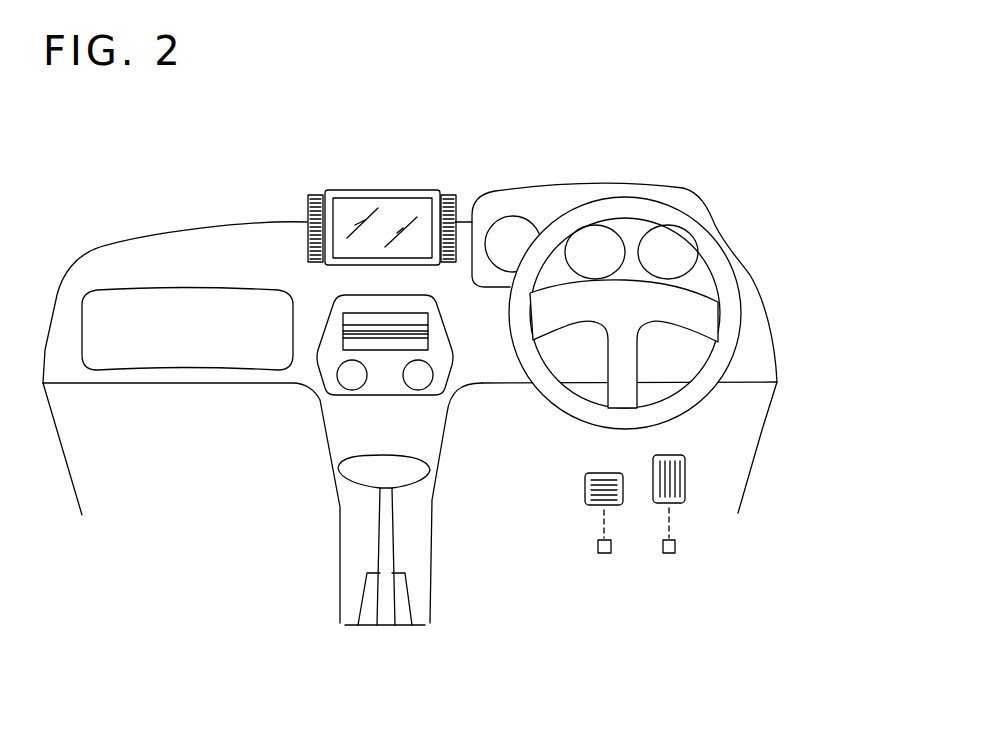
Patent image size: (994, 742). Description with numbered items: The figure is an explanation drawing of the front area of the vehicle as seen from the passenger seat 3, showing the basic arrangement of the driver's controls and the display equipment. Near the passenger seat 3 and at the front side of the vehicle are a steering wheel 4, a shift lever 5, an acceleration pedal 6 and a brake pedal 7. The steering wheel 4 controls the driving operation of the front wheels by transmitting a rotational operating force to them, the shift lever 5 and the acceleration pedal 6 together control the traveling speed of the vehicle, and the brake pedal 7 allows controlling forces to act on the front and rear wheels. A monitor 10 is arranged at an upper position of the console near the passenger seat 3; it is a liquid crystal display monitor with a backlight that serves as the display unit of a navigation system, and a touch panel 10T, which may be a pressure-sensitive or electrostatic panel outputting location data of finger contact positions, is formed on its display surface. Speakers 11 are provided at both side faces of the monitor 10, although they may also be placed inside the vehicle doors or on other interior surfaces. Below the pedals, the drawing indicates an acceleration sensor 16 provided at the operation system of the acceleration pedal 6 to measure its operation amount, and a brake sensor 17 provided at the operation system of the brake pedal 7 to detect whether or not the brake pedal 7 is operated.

The passenger seat 3 is at (772, 227).
The steering wheel 4 is at (732, 287).
The shift lever 5 is at (382, 468).
The acceleration pedal 6 is at (687, 482).
The brake pedal 7 is at (607, 473).
The monitor 10 is at (382, 190).
The touch panel 10T is at (390, 207).
The speakers 11 is at (307, 207).
The acceleration sensor 16 is at (675, 547).
The brake sensor 17 is at (598, 547).